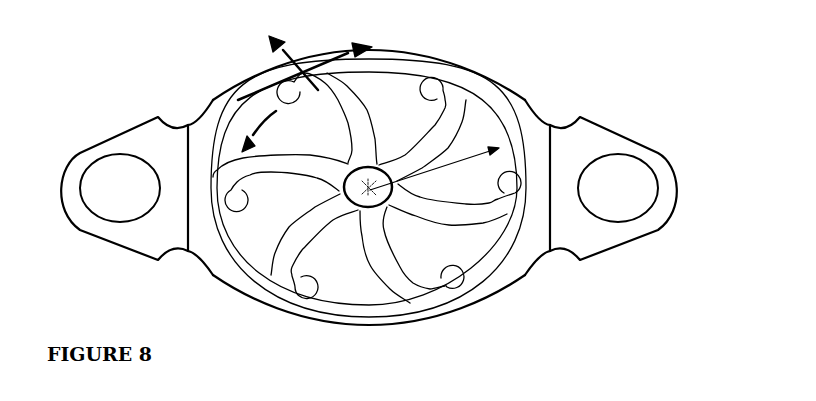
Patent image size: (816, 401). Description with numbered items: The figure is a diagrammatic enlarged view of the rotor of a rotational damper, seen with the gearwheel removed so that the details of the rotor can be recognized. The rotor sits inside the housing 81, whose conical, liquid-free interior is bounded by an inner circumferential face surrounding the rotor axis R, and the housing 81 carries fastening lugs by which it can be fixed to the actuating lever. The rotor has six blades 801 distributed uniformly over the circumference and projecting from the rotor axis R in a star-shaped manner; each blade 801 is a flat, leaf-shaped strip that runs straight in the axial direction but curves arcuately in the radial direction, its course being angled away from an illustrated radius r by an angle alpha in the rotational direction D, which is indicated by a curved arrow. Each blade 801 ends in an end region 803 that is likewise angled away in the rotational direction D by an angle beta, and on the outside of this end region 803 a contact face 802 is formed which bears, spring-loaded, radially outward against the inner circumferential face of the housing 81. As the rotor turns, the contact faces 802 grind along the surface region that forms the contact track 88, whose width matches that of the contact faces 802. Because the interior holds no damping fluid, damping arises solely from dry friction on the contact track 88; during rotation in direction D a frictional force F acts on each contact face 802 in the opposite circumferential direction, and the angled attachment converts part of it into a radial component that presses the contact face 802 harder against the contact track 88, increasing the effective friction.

The housing 81 is at (239, 278).
The contact track 88 is at (331, 306).
The blade 801 is at (503, 192).
The contact face 802 is at (294, 69).
The end region 803 is at (520, 198).
The rotational direction D is at (249, 128).
The frictional force F is at (290, 65).
The rotor axis R is at (372, 190).
The radius r is at (479, 150).